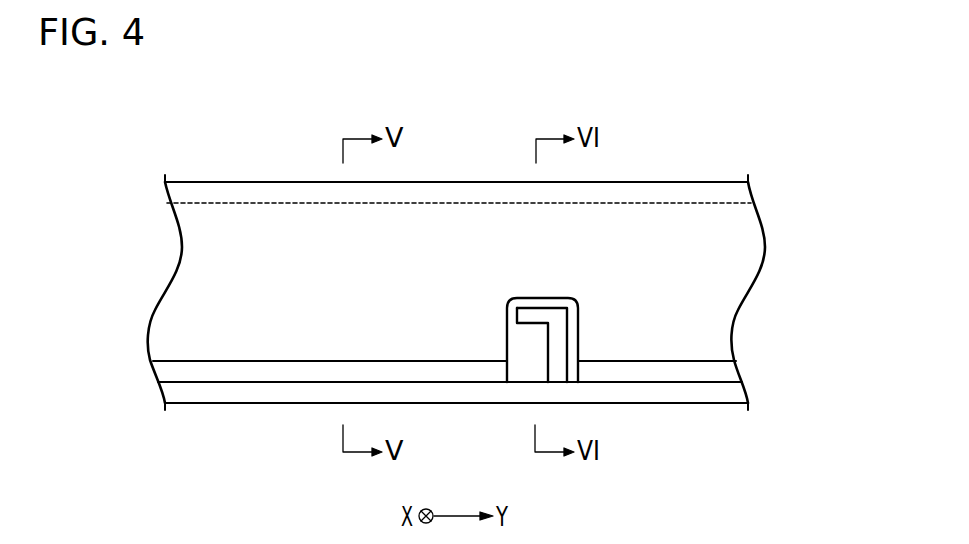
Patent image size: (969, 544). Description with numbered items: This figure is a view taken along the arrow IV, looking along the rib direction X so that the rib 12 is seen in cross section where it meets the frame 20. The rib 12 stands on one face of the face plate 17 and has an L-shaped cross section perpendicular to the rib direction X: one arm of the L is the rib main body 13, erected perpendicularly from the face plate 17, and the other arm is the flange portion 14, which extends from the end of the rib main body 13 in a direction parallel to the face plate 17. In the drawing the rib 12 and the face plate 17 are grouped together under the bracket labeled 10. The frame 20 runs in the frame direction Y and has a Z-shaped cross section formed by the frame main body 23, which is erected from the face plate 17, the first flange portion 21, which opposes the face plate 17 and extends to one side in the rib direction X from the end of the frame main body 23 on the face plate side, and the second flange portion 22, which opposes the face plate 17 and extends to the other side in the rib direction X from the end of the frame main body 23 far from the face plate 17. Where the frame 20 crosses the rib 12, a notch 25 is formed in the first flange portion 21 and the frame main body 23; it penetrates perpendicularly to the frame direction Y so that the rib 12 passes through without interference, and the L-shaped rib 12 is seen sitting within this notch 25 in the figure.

The first substrate 10 is at (842, 317).
The rib 12 is at (798, 295).
The rib main body 13 is at (558, 345).
The flange portion 14 is at (535, 312).
The face plate 17 is at (698, 398).
The frame 20 is at (83, 182).
The first flange portion 21 is at (187, 372).
The second flange portion 22 is at (182, 193).
The frame main body 23 is at (190, 282).
The notch 25 is at (507, 337).